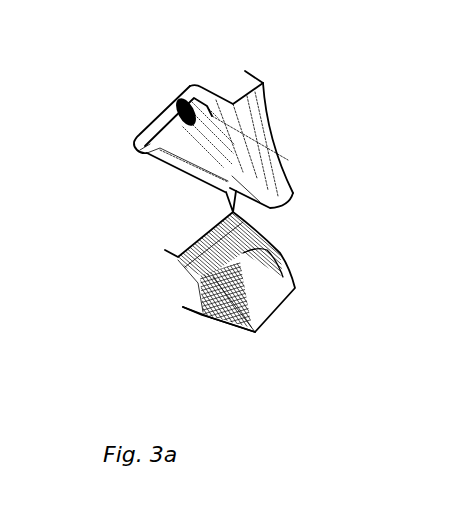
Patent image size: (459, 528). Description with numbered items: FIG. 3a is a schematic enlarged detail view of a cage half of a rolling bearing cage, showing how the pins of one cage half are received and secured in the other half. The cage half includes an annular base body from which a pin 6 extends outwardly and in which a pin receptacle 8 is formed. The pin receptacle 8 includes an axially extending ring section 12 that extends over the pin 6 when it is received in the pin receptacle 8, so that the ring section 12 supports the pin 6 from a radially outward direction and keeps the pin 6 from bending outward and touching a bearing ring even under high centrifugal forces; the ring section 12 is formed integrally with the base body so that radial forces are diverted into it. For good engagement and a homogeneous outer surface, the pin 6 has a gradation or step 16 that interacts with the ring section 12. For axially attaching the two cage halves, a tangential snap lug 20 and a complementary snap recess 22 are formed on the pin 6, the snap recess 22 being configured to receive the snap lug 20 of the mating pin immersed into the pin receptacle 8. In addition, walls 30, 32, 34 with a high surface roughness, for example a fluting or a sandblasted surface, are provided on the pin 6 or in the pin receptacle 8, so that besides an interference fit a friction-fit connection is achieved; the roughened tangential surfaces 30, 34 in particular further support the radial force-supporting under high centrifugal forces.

The pin 6 is at (302, 246).
The pin receptacle 8 is at (198, 85).
The ring section 12 is at (163, 115).
The step 16 is at (202, 313).
The snap lug 20 is at (228, 177).
The snap recess 22 is at (160, 158).
The wall 30 is at (233, 327).
The wall 32 is at (294, 288).
The wall 34 is at (200, 140).